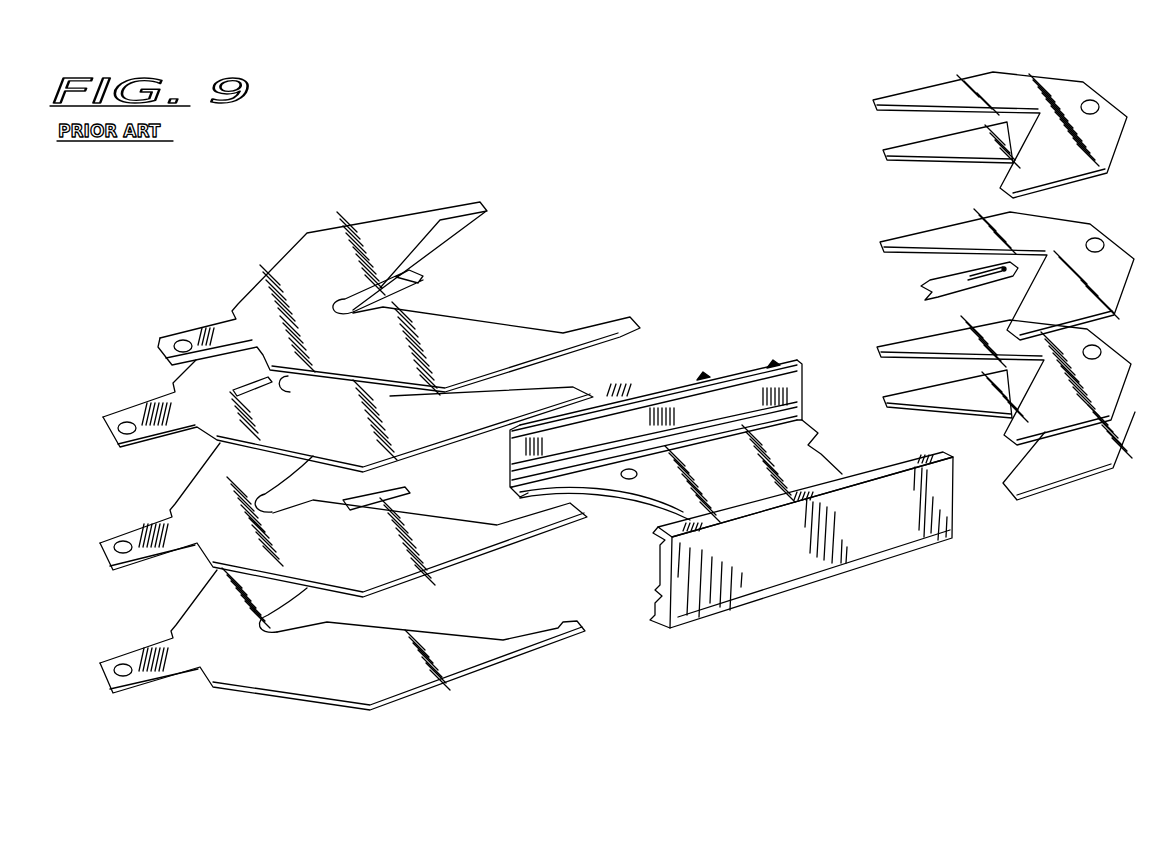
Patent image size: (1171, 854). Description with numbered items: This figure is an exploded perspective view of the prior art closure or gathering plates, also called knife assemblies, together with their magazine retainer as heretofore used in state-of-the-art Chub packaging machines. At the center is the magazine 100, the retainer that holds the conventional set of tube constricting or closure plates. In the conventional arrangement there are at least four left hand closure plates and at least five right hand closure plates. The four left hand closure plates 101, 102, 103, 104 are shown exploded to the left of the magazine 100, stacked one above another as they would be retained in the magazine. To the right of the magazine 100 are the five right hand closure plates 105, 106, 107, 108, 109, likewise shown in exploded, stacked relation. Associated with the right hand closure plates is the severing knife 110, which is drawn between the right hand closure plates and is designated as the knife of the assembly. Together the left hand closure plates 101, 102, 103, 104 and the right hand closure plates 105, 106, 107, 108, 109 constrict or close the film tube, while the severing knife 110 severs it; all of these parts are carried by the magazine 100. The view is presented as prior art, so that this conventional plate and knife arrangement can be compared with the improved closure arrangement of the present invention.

The magazine 100 is at (732, 365).
The left hand closure plate 101 is at (397, 217).
The left hand closure plate 102 is at (443, 447).
The left hand closure plate 103 is at (497, 549).
The left hand closure plate 104 is at (477, 674).
The right hand closure plate 105 is at (948, 83).
The right hand closure plate 106 is at (935, 138).
The right hand closure plate 107 is at (958, 224).
The right hand closure plate 108 is at (943, 334).
The right hand closure plate 109 is at (935, 387).
The severing knife 110 is at (931, 280).